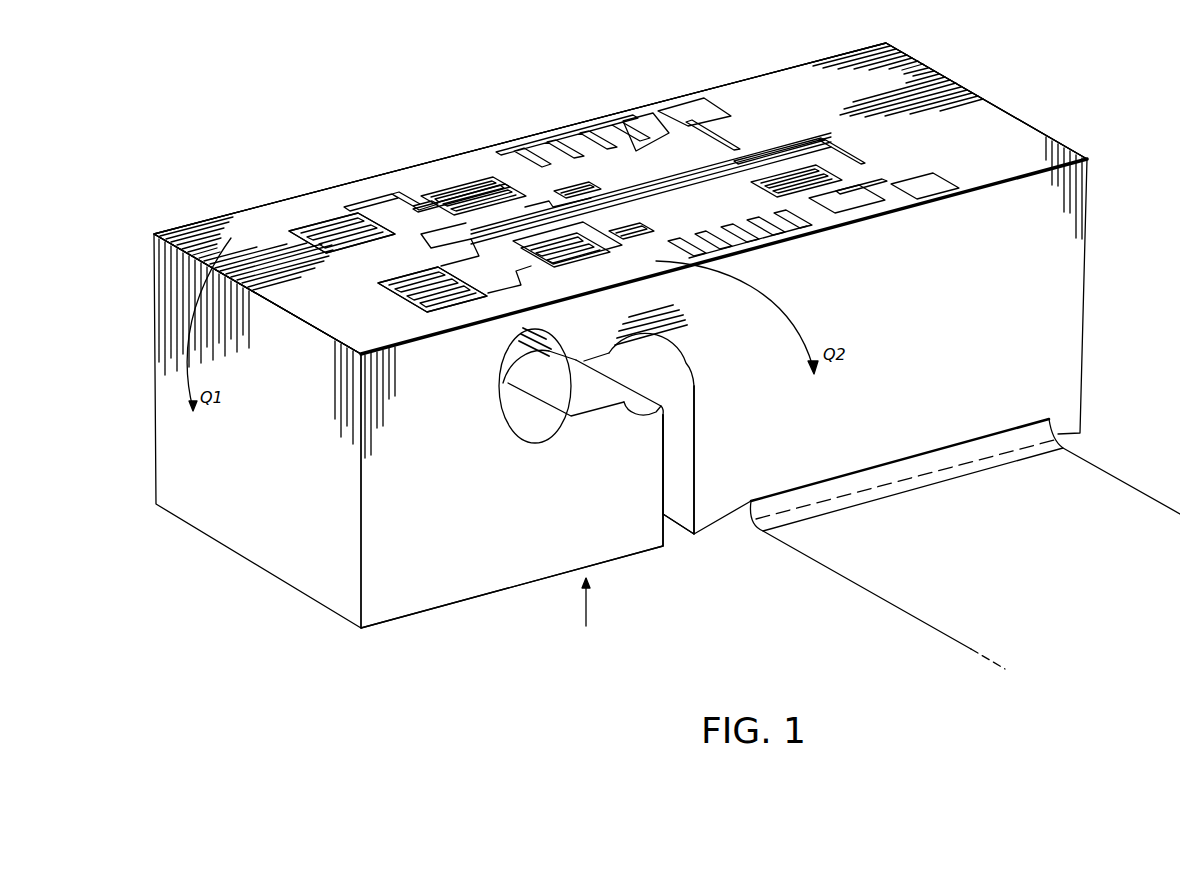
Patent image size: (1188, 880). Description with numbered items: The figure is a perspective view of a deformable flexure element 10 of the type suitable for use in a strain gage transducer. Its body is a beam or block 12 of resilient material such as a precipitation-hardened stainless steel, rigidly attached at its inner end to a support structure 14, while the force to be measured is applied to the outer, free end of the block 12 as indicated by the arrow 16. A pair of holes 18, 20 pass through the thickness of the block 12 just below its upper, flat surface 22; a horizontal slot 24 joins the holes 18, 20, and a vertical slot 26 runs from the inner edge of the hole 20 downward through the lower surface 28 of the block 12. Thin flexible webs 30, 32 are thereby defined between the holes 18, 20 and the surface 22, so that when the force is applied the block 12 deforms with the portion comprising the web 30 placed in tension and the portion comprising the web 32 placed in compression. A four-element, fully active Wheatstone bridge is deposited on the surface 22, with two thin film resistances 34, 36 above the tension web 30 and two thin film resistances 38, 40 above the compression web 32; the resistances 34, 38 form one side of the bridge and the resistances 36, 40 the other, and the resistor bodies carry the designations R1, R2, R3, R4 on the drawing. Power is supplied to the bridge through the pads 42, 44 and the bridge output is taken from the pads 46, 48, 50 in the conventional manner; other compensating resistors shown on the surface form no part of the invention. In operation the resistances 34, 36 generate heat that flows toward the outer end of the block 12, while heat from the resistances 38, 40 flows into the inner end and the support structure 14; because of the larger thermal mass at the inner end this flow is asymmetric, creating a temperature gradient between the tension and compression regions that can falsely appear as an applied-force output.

The deformable flexure element 10 is at (308, 174).
The block 12 is at (302, 527).
The support structure 14 is at (840, 540).
The arrow 16 is at (512, 497).
The hole 18 is at (540, 418).
The hole 20 is at (676, 350).
The upper flat surface 22 is at (253, 220).
The horizontal slot 24 is at (596, 392).
The vertical slot 26 is at (683, 448).
The lower surface 28 is at (607, 563).
The flexible web 30 is at (517, 325).
The flexible web 32 is at (635, 293).
The thin film resistance 34 is at (312, 222).
The thin film resistance 36 is at (404, 300).
The thin film resistance 38 is at (489, 185).
The thin film resistance 40 is at (535, 257).
The pad 42 is at (697, 108).
The pad 44 is at (855, 195).
The pad 46 is at (790, 210).
The pad 48 is at (935, 180).
The pad 50 is at (632, 133).
The strain gage resistor R1 is at (340, 240).
The strain gage resistor R2 is at (481, 200).
The strain gage resistor R3 is at (422, 289).
The strain gage resistor R4 is at (575, 250).